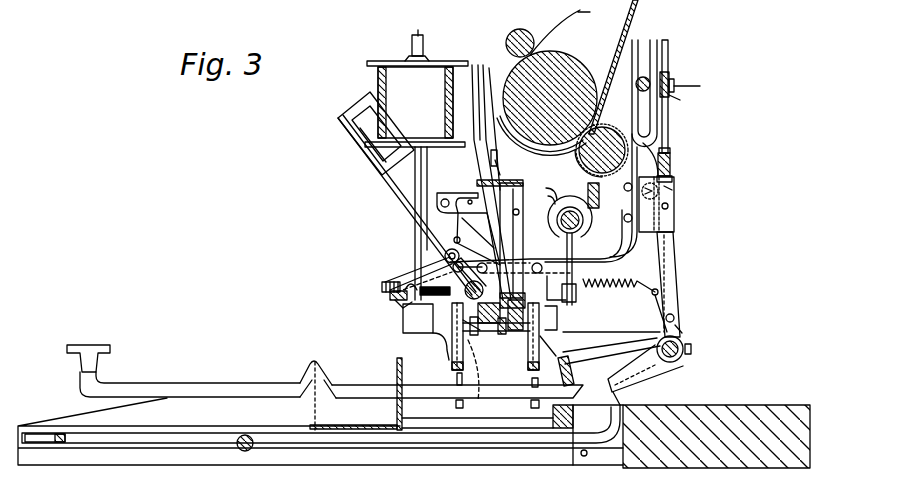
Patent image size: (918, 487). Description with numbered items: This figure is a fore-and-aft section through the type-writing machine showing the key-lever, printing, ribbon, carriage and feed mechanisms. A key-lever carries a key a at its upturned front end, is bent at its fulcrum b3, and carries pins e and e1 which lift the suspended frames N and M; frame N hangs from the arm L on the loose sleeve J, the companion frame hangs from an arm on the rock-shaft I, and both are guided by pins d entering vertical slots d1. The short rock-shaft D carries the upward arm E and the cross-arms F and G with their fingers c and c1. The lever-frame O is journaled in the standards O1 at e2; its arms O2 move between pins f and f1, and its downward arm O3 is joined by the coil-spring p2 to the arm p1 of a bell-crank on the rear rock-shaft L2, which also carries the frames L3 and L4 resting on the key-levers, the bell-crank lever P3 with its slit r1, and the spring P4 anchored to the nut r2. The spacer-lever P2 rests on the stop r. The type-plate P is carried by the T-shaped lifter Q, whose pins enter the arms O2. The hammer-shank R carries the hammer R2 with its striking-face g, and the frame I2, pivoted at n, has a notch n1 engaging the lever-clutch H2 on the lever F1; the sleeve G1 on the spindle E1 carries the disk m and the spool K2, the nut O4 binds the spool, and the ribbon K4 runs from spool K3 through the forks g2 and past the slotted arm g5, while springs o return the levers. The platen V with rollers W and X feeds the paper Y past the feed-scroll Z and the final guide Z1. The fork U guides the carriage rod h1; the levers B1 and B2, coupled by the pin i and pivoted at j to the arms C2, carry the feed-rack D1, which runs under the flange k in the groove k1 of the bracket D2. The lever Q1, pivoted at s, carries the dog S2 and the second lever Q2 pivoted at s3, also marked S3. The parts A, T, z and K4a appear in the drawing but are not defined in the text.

The base A is at (760, 405).
The spacer-lever P2 is at (185, 434).
The coil tension-spring P4 is at (44, 434).
The stop r is at (589, 453).
The key a is at (88, 349).
The finger c is at (331, 381).
The fulcrum b3 is at (310, 370).
The vertically-suspended frame M is at (453, 362).
The cross-arm G is at (528, 336).
The pin d is at (452, 310).
The vertical slot d1 is at (462, 340).
The cross-arm F is at (485, 331).
The rock-shaft D is at (497, 334).
The finger c1 is at (557, 351).
The pin e1 is at (457, 382).
The pin e is at (532, 383).
The frame N is at (557, 371).
The frame L4 is at (611, 348).
The rectangular frame L3 is at (645, 368).
The bell-crank lever P3 is at (632, 378).
The horizontal rock-shaft L2 is at (683, 342).
The adjustable nut r2 is at (691, 349).
The lever Q1 is at (680, 282).
The upwardly-extending arm p1 is at (660, 300).
The slot r1 is at (676, 325).
The coil-spring attachment p2 is at (600, 284).
The second lever Q2 is at (630, 238).
The arm L is at (536, 255).
The roller T is at (575, 250).
The bar z is at (601, 194).
The pivot s3 is at (619, 202).
The tension-spring o is at (524, 205).
The T-shaped lifter Q is at (516, 240).
The arm E is at (510, 184).
The pin f1 is at (547, 183).
The pin f is at (544, 195).
The fork g2 is at (473, 68).
The slotted arm g5 is at (497, 113).
The strip K4a is at (480, 65).
The feed-scroll Z is at (502, 152).
The ribbon K4 is at (415, 102).
The spool K2 is at (380, 61).
The downwardly-extending arm O3 is at (410, 58).
The vertical stationary spindle E1 is at (416, 33).
The nut O4 is at (424, 46).
The type-plate P is at (480, 148).
The sleeve G1 is at (415, 228).
The arm O2 is at (462, 142).
The bearing e2 is at (441, 201).
The lever-frame O is at (465, 205).
The vertical standard O1 is at (478, 233).
The pivot n is at (451, 245).
The hammer R2 is at (376, 126).
The hammer-shank R is at (407, 205).
The striking-face g is at (366, 150).
The rectangular frame I2 is at (418, 271).
The notch n1 is at (392, 279).
The loose sleeve J is at (452, 270).
The spool K3 is at (469, 282).
The rock-shaft I is at (459, 294).
The disk m is at (382, 286).
The lever-clutch H2 is at (390, 297).
The lever F1 is at (396, 304).
The rotary cylindrical platen V is at (566, 72).
The frictional roller W is at (529, 38).
The paper Y is at (566, 30).
The frictional roller X is at (606, 126).
The final guide Z1 is at (618, 40).
The fixed vertical fork U is at (646, 96).
The guide-rod h1 is at (647, 78).
The downwardly-extending arm C2 is at (668, 122).
The lever B1 is at (669, 72).
The lever B2 is at (675, 80).
The pivot j is at (689, 79).
The lateral pin i is at (679, 101).
The inward flange k is at (666, 152).
The carriage feed-rack D1 is at (670, 162).
The dog S2 is at (674, 180).
The groove k1 is at (665, 185).
The bracket D2 is at (676, 232).
The pivot s is at (668, 206).
The pivot S3 is at (650, 191).